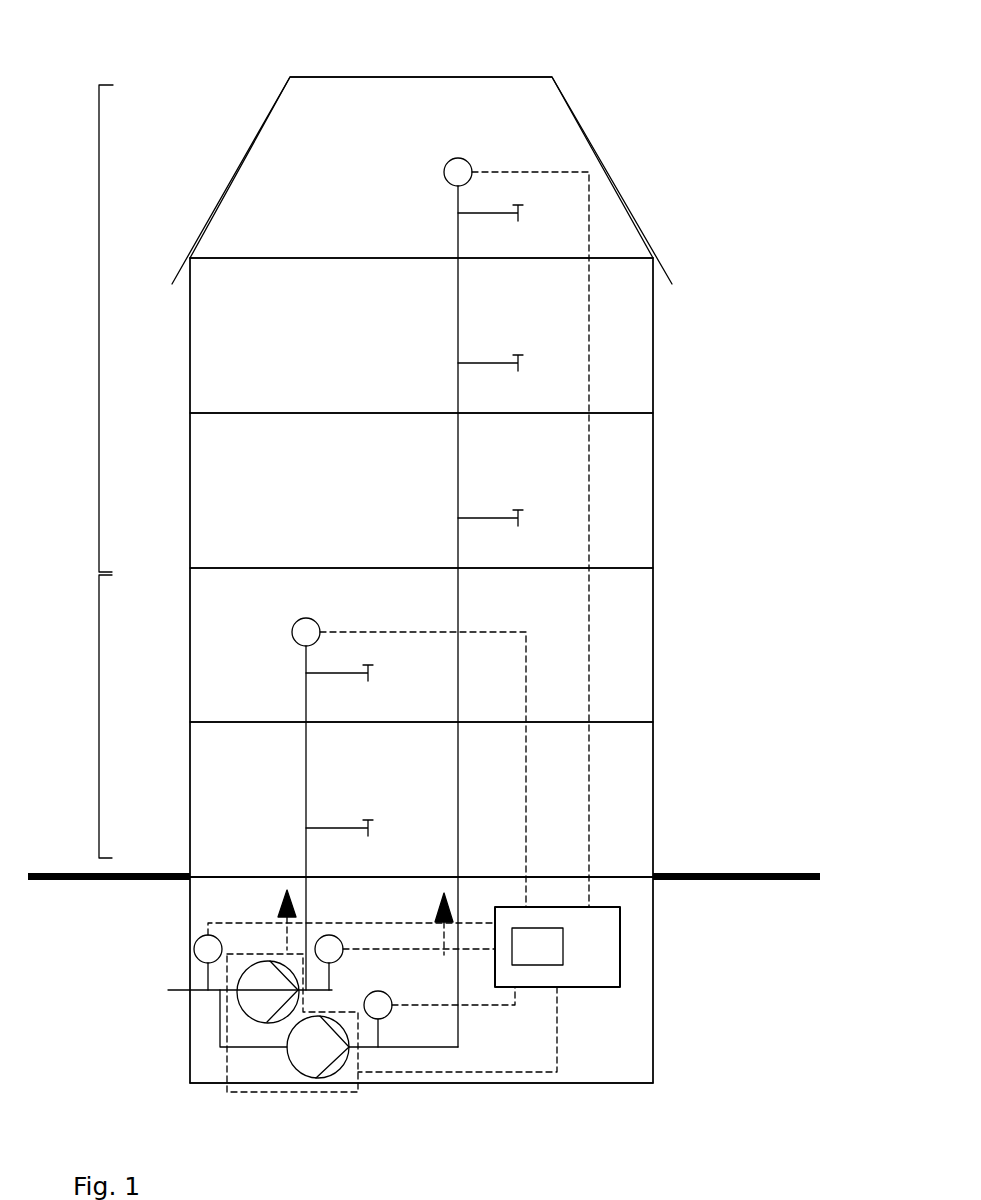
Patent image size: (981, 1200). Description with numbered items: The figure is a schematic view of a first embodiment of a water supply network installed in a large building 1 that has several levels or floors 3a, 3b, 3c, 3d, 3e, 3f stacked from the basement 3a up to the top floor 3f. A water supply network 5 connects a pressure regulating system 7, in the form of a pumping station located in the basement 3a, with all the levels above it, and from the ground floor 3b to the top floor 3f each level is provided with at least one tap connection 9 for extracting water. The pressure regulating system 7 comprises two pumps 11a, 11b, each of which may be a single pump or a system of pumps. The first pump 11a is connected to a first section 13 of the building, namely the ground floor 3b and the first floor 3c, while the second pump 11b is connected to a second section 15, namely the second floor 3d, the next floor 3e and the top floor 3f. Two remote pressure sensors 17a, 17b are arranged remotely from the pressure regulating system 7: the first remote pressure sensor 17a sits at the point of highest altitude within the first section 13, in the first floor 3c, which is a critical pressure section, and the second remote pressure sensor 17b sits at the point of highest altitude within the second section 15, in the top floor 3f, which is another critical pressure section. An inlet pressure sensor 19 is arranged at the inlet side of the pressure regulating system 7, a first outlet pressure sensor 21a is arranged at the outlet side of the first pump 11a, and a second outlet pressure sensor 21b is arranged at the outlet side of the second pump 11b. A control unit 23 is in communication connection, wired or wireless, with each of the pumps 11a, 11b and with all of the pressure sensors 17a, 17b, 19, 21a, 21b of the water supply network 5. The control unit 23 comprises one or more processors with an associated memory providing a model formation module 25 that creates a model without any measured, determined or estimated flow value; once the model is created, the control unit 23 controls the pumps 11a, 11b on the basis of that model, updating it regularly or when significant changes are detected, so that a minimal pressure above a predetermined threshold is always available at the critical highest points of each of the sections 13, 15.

The building 1 is at (222, 96).
The basement 3a is at (653, 988).
The ground floor 3b is at (653, 803).
The first floor 3c is at (653, 643).
The second floor 3d is at (653, 483).
The floor 3e is at (653, 335).
The top floor 3f is at (615, 187).
The water supply network 5 is at (466, 1034).
The pressure regulating system 7 is at (273, 1093).
The tap connection 9 is at (517, 212).
The first pump 11a is at (242, 1008).
The second pump 11b is at (285, 1060).
The first section 13 is at (99, 718).
The second section 15 is at (99, 328).
The first remote pressure sensor 17a is at (293, 638).
The second remote pressure sensor 17b is at (447, 182).
The inlet pressure sensor 19 is at (196, 944).
The first outlet pressure sensor 21a is at (329, 935).
The second outlet pressure sensor 21b is at (389, 993).
The control unit 23 is at (570, 987).
The model formation module 25 is at (563, 935).